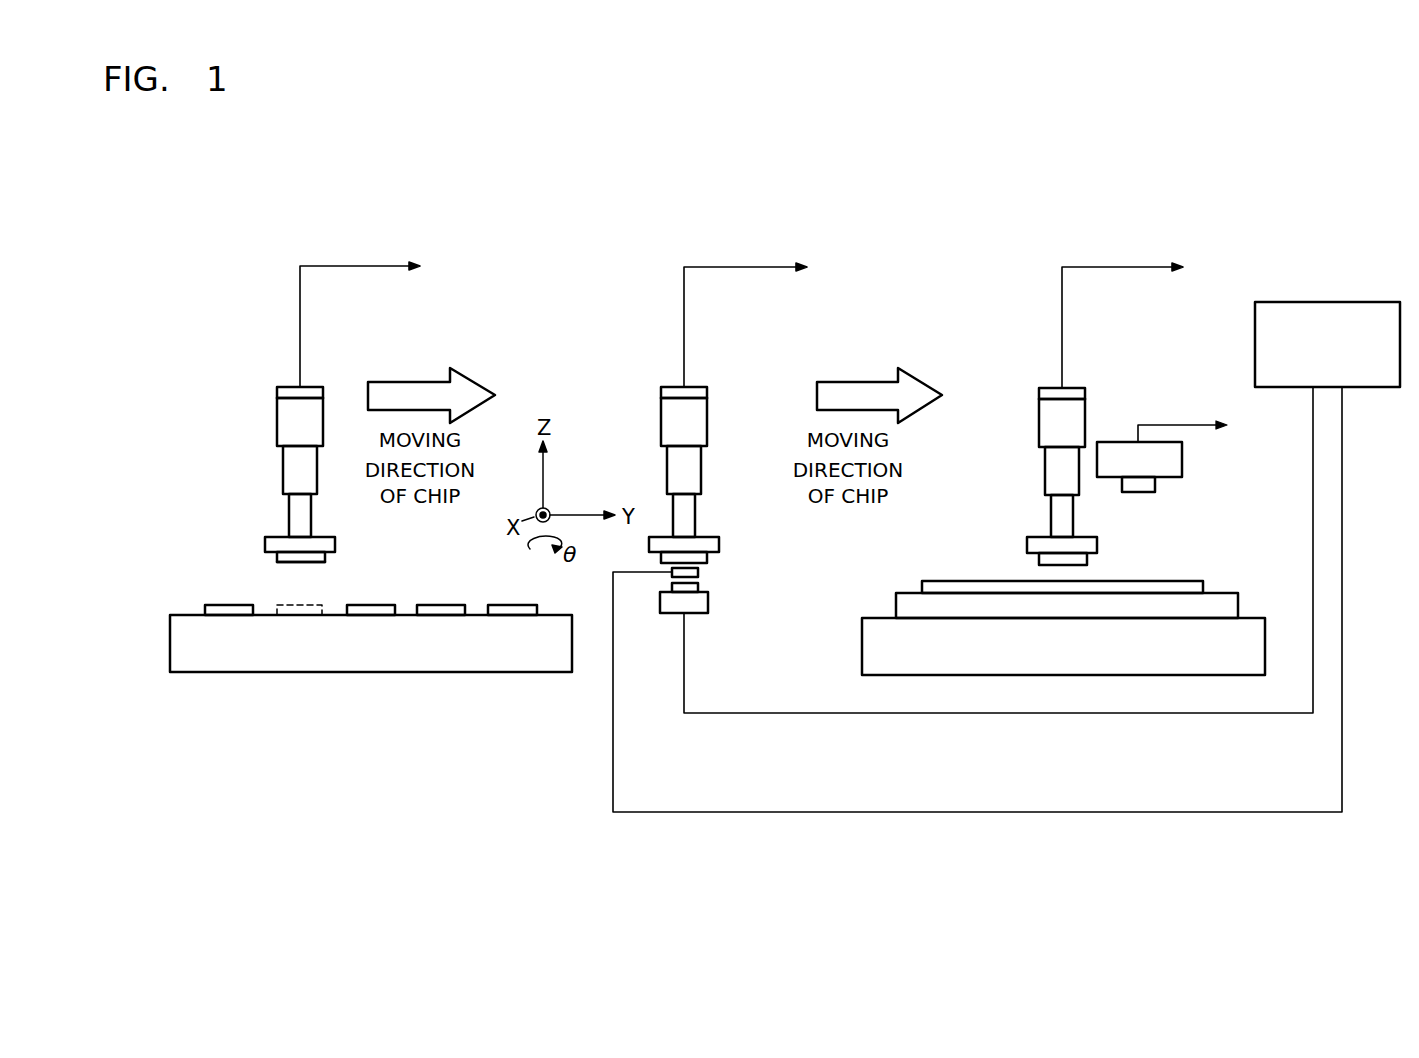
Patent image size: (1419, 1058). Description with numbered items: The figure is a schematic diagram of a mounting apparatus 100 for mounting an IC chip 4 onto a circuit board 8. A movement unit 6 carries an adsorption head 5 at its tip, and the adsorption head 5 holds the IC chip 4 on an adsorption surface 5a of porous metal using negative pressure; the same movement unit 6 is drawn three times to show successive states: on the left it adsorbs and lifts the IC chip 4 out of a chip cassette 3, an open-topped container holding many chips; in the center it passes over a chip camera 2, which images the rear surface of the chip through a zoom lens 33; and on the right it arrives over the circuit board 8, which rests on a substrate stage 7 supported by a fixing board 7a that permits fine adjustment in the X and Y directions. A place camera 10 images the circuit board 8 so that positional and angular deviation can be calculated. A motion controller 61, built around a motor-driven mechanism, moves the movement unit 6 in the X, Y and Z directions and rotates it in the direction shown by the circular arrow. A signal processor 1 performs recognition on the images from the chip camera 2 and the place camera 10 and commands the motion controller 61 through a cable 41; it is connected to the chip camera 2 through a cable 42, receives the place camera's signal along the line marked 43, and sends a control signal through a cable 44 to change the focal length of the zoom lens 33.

The signal processor 1 is at (1325, 302).
The chip camera 2 is at (670, 606).
The chip cassette 3 is at (290, 672).
The IC chip 4 is at (277, 557).
The adsorption head 5 is at (265, 543).
The adsorption surface 5a is at (325, 562).
The movement unit 6 is at (277, 424).
The motion controller 61 is at (277, 391).
The substrate stage 7 is at (896, 608).
The fixing board 7a is at (862, 638).
The circuit board 8 is at (950, 581).
The place camera 10 is at (1183, 458).
The zoom lens 33 is at (700, 573).
The cable 41 is at (316, 266).
The cable 42 is at (714, 715).
The signal line from height sensor 43 is at (1183, 421).
The cable 44 is at (714, 814).
The mounting apparatus 100 is at (461, 794).